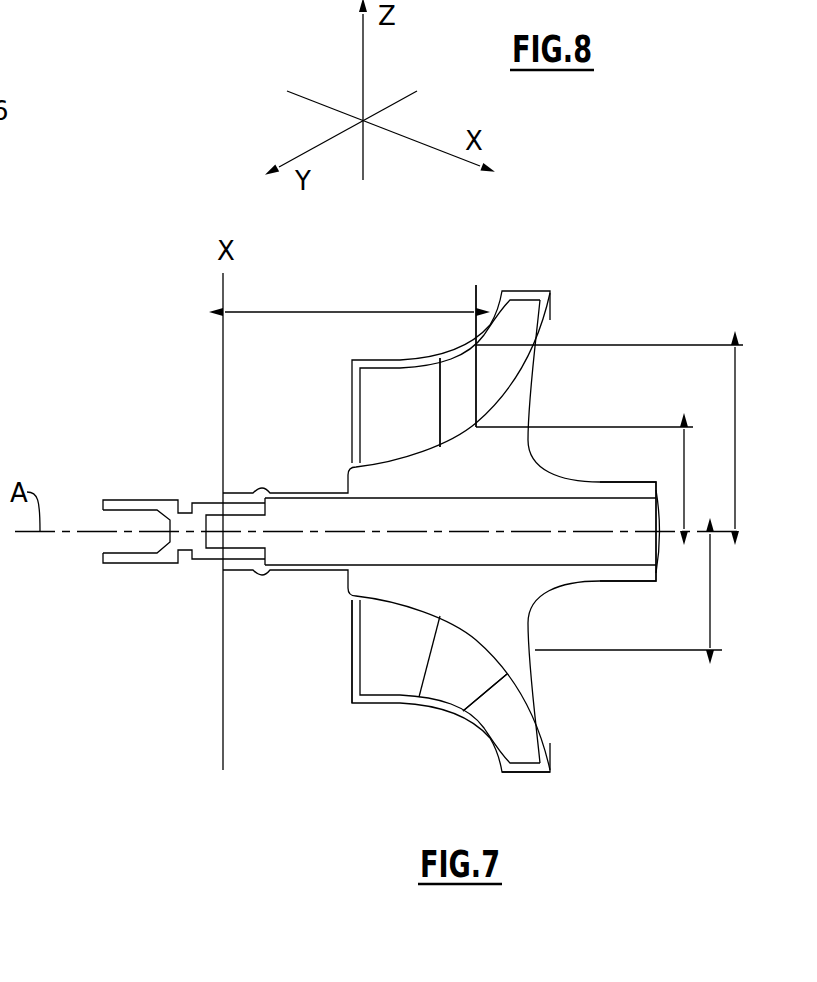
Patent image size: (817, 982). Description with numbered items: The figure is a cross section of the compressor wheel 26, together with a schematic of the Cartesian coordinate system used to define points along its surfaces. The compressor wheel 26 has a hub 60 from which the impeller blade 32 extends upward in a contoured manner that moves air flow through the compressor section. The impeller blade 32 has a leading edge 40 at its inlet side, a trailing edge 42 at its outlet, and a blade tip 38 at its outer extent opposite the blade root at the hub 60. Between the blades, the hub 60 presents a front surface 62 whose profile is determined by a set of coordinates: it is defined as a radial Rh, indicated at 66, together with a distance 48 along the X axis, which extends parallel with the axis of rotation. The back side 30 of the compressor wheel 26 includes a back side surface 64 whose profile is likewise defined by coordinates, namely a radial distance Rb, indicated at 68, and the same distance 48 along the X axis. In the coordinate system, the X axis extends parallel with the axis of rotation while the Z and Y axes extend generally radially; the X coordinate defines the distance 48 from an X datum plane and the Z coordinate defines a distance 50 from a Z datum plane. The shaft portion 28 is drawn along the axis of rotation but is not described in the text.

The compressor wheel 26 is at (452, 509).
The shaft 28 is at (322, 616).
The back side 30 is at (594, 325).
The impeller blade 32 is at (390, 678).
The blade tip 38 is at (438, 716).
The leading edge 40 is at (354, 669).
The trailing edge 42 is at (527, 778).
The distance along the X axis 48 is at (345, 311).
The distance along the Z axis 50 is at (737, 443).
The hub 60 is at (520, 638).
The front surface 62 is at (430, 440).
The back side surface 64 is at (541, 444).
The radial Rh 66 is at (684, 465).
The radial distance Rb 68 is at (710, 591).